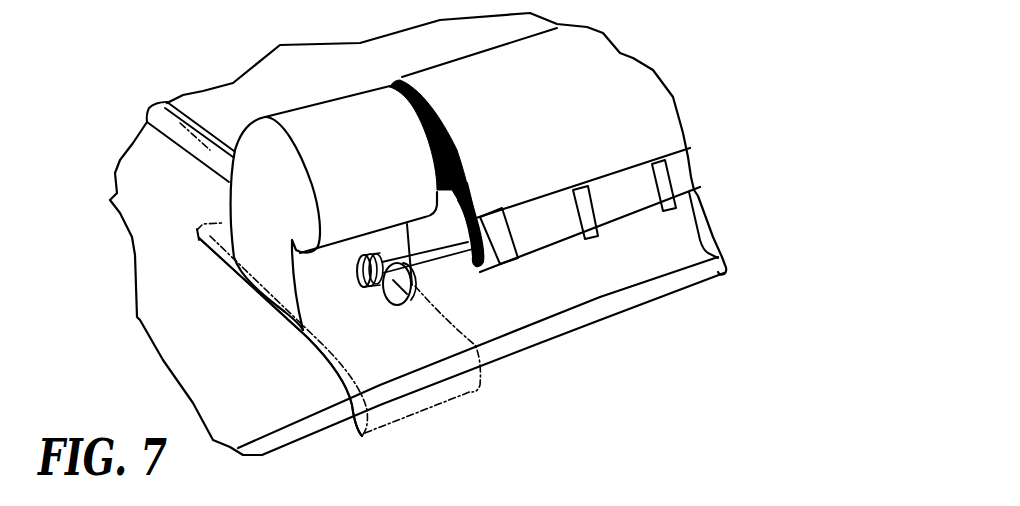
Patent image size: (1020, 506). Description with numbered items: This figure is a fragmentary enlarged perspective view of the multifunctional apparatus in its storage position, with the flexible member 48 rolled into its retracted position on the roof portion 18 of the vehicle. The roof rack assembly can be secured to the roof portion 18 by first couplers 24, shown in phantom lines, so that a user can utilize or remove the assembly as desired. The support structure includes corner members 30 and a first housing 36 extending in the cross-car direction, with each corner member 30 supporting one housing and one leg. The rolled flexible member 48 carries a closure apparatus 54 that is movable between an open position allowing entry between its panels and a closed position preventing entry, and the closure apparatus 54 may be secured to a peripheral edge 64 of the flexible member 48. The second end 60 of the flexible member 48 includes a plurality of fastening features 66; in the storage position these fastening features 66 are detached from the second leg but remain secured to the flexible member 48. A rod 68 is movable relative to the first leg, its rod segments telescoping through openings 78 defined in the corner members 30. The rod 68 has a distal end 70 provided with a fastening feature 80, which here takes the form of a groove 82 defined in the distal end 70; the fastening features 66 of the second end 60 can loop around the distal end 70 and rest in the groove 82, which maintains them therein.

The roof portion 18 is at (153, 260).
The first couplers 24 is at (430, 410).
The corner members 30 is at (253, 222).
The first housing 36 is at (177, 133).
The flexible member 48 is at (607, 77).
The closure apparatus 54 is at (432, 90).
The second end 60 is at (728, 268).
The peripheral edge 64 is at (480, 213).
The fastening features 66 is at (673, 182).
The rod 68 is at (360, 266).
The distal end 70 is at (405, 295).
The openings 78 is at (362, 267).
The fastening feature 80 is at (383, 260).
The groove 82 is at (383, 260).